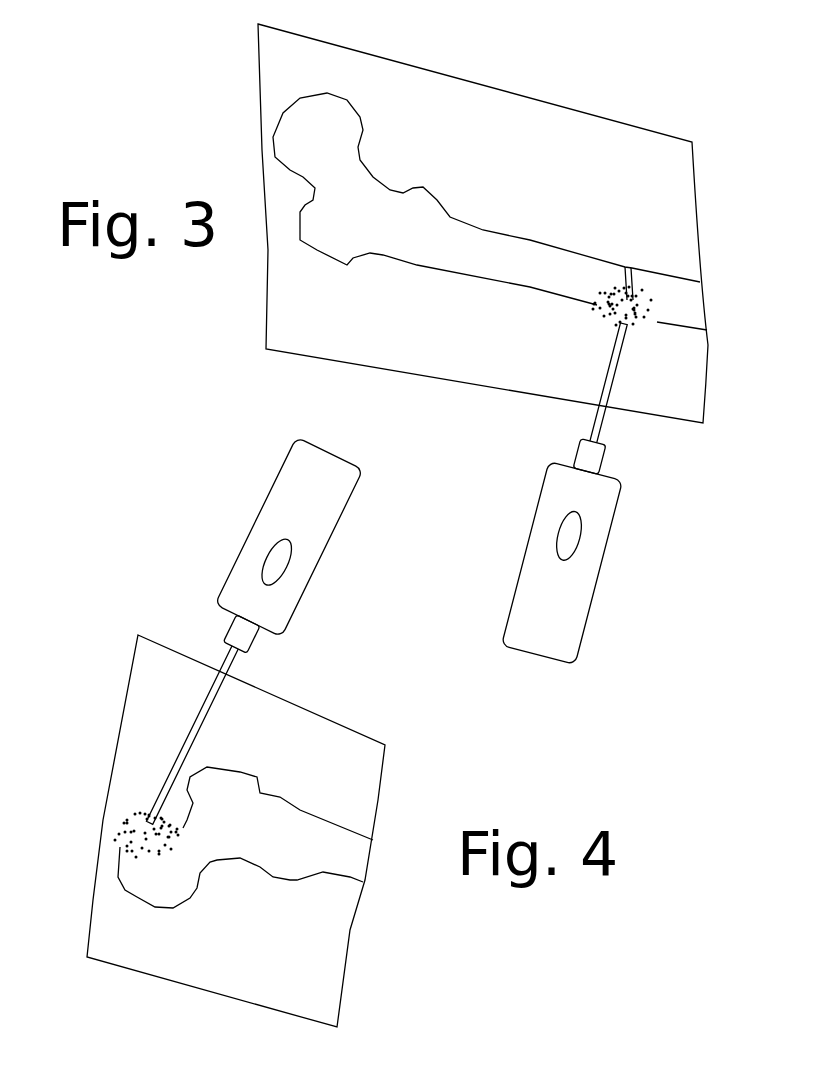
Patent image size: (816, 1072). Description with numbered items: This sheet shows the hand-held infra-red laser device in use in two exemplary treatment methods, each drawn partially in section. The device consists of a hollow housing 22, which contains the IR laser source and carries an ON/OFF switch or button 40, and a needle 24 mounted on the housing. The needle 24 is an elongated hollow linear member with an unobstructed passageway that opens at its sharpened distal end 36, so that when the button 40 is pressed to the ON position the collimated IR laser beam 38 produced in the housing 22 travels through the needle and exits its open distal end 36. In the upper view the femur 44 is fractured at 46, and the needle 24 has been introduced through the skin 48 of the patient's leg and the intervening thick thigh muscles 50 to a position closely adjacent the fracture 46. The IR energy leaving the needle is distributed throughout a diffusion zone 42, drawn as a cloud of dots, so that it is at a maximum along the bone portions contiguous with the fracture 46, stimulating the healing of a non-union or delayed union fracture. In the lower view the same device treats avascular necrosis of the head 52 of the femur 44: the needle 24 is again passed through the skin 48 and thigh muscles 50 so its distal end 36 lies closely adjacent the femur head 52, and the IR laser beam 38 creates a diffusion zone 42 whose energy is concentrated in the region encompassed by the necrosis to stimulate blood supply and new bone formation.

In FIG. 3, the housing 22 is at (592, 538).
In FIG. 4, the housing 22 is at (293, 590).
In FIG. 3, the needle 24 is at (600, 418).
In FIG. 4, the needle 24 is at (198, 708).
In FIG. 3, the distal end of the needle 36 is at (617, 352).
In FIG. 4, the distal end of the needle 36 is at (162, 800).
In FIG. 3, the IR laser beam 38 is at (615, 343).
In FIG. 4, the IR laser beam 38 is at (143, 813).
In FIG. 3, the ON/OFF switch or button 40 is at (560, 543).
In FIG. 4, the ON/OFF switch or button 40 is at (273, 568).
In FIG. 3, the diffusion zone 42 is at (597, 317).
In FIG. 4, the diffusion zone 42 is at (115, 845).
In FIG. 3, the femur 44 is at (517, 257).
In FIG. 4, the femur 44 is at (285, 823).
In FIG. 3, the fracture 46 is at (632, 270).
In FIG. 3, the skin 48 is at (353, 368).
In FIG. 4, the skin 48 is at (270, 690).
In FIG. 3, the thigh muscles 50 is at (417, 358).
In FIG. 4, the thigh muscles 50 is at (273, 755).
In FIG. 3, the head of the femur 52 is at (340, 127).
In FIG. 4, the head of the femur 52 is at (163, 877).